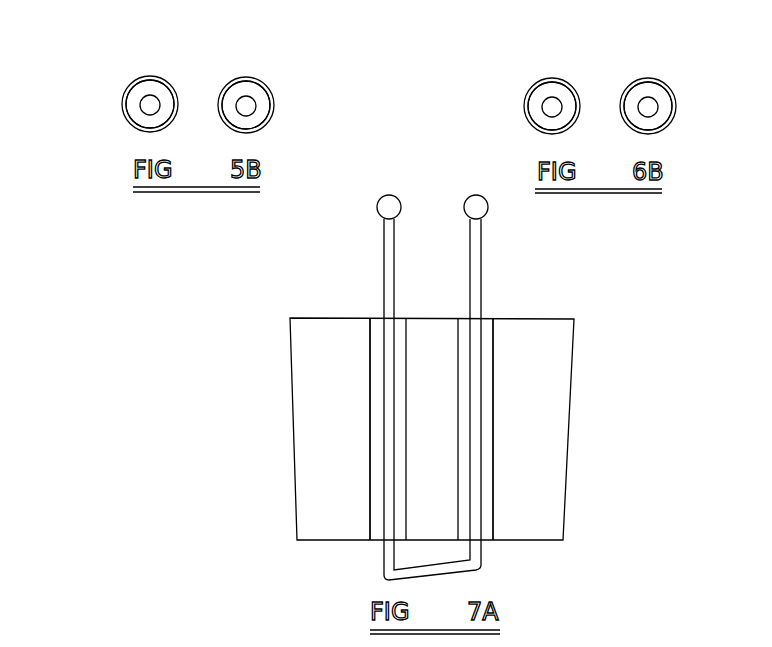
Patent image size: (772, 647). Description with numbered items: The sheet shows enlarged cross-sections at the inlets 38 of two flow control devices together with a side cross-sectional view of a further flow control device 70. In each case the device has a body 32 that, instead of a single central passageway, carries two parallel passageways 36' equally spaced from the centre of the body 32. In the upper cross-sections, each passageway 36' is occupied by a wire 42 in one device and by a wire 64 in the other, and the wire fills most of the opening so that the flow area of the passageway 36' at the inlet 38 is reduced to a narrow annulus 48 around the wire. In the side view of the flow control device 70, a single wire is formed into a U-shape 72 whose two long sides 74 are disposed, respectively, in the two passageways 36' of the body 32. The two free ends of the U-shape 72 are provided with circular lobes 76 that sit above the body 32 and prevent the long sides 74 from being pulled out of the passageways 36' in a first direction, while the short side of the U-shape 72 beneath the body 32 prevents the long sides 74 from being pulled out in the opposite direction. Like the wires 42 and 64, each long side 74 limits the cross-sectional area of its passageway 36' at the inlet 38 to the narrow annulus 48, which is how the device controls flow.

In FIG. 7A, the body 32 is at (543, 389).
In FIG. 5B, the passageway 36' is at (188, 121).
In FIG. 6B, the passageway 36' is at (593, 114).
In FIG. 7A, the passageway 36' is at (456, 393).
In FIG. 5B, the inlet 38 is at (161, 75).
In FIG. 6B, the inlet 38 is at (566, 76).
In FIG. 7A, the inlet 38 is at (463, 316).
In FIG. 5B, the wire 42 is at (143, 106).
In FIG. 5B, the annulus 48 is at (137, 94).
In FIG. 6B, the annulus 48 is at (538, 97).
In FIG. 6B, the wire 64 is at (547, 108).
In FIG. 7A, the flow control device 70 is at (424, 371).
In FIG. 7A, the U-shape 72 is at (476, 399).
In FIG. 7A, the long side 74 is at (380, 503).
In FIG. 7A, the circular lobe 76 is at (472, 208).